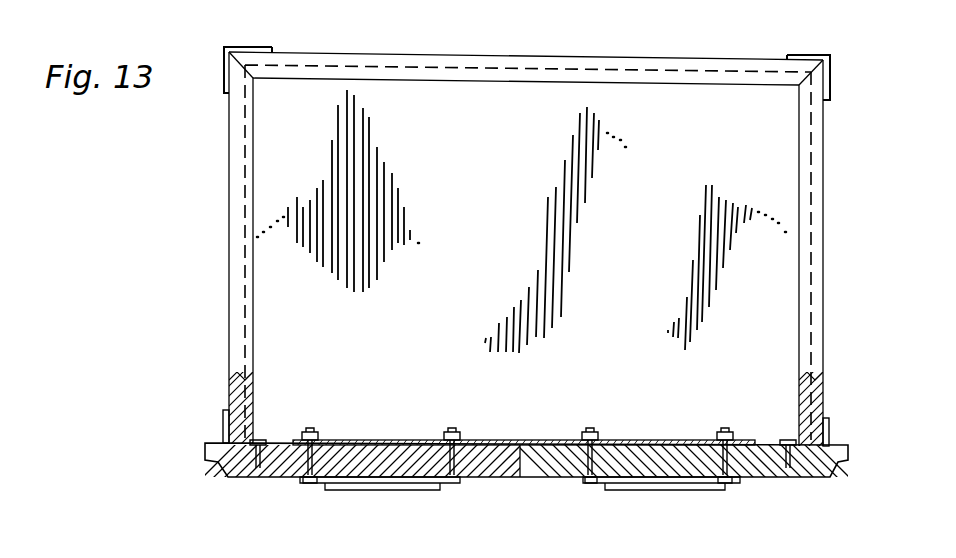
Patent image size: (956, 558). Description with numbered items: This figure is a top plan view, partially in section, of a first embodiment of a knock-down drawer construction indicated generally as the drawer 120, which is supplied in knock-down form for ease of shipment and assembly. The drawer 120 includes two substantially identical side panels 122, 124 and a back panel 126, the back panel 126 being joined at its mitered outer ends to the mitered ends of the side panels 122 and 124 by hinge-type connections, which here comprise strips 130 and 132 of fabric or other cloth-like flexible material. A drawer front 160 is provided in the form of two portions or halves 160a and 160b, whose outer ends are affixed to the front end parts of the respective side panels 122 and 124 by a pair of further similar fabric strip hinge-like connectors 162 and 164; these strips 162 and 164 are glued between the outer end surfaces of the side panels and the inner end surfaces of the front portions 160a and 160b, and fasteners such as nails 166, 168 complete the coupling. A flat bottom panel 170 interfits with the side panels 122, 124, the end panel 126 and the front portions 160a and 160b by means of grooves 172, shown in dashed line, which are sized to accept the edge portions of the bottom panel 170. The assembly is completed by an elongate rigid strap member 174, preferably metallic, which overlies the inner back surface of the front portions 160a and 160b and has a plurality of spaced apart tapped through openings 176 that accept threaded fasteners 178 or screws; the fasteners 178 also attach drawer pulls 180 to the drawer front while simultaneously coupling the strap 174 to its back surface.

The drawer 120 is at (228, 222).
The side panel 122 is at (230, 168).
The side panel 124 is at (833, 180).
The back panel 126 is at (467, 57).
The strip 130 is at (266, 28).
The strip 132 is at (803, 28).
The drawer front 160 is at (526, 497).
The front portion 160a is at (500, 477).
The front portion 160b is at (540, 480).
The hinge-like connector 162 is at (227, 420).
The hinge-like connector 164 is at (828, 440).
The nail 166 is at (245, 440).
The nail 168 is at (788, 440).
The bottom panel 170 is at (530, 229).
The grooves 172 is at (500, 70).
The strap member 174 is at (533, 442).
The through openings 176 is at (303, 437).
The fasteners 178 is at (310, 460).
The drawer pulls 180 is at (398, 490).